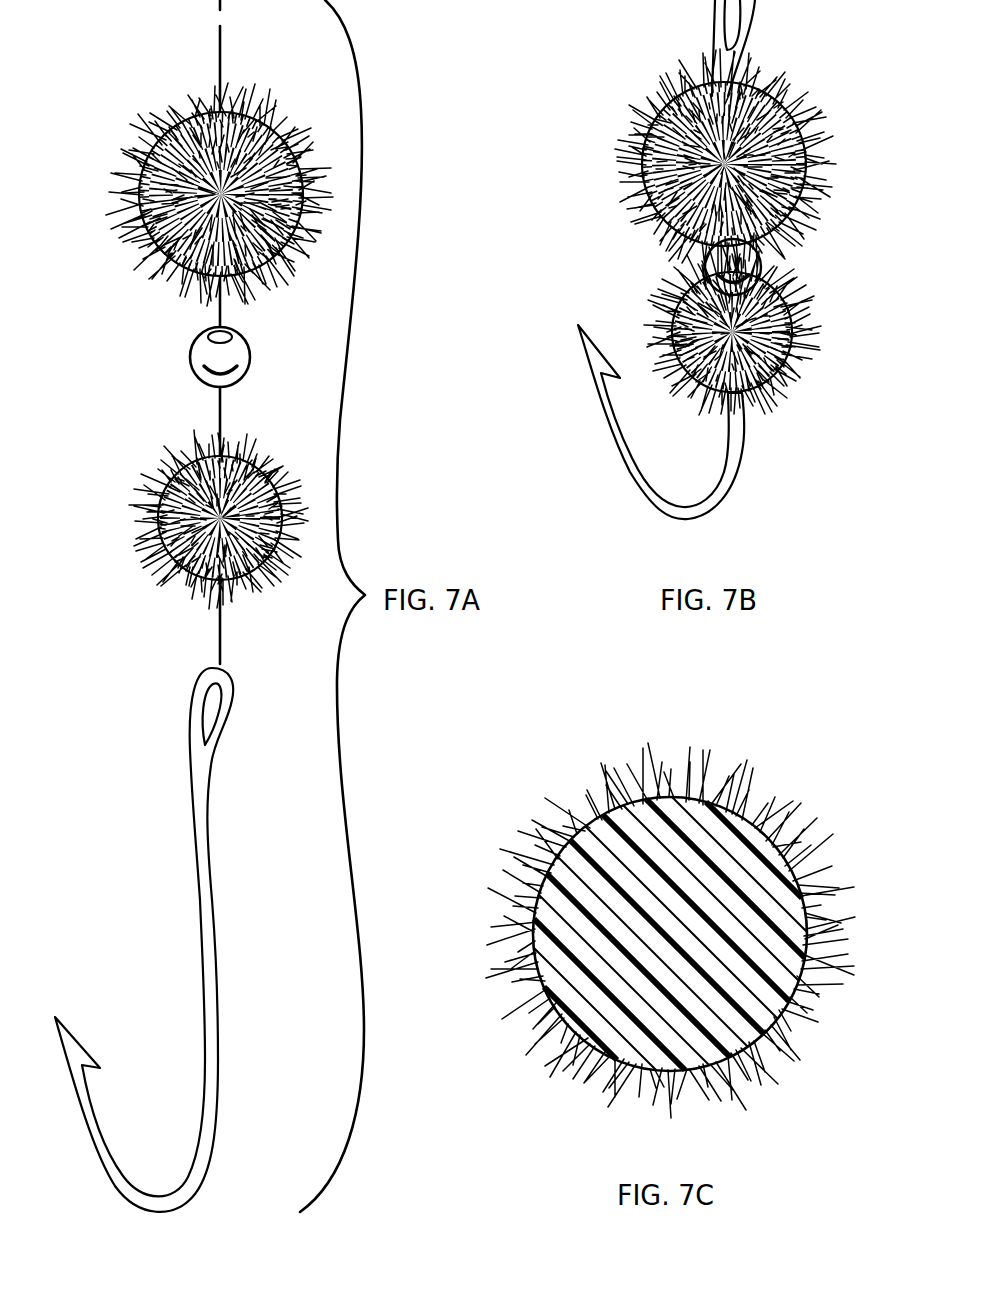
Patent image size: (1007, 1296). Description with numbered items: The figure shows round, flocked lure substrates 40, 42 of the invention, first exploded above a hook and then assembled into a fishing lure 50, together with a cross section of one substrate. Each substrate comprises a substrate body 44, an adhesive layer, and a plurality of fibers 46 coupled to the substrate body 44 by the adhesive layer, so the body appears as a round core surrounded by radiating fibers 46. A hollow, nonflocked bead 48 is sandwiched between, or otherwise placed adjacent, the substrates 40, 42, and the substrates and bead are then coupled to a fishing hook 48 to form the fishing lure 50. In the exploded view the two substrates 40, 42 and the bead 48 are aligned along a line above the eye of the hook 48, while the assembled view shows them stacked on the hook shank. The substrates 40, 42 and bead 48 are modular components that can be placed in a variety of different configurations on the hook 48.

In FIG. 7A, the flocked substrate 40 is at (187, 162).
In FIG. 7C, the flocked substrate 40 is at (660, 930).
In FIG. 7A, the flocked substrate 42 is at (136, 479).
In FIG. 7A, the substrate body 44 is at (248, 86).
In FIG. 7C, the substrate body 44 is at (740, 848).
In FIG. 7A, the fibers 46 is at (297, 98).
In FIG. 7C, the fibers 46 is at (822, 853).
In FIG. 7A, the bead / fishing hook 48 is at (181, 346).
In FIG. 7B, the fishing lure 50 is at (568, 207).